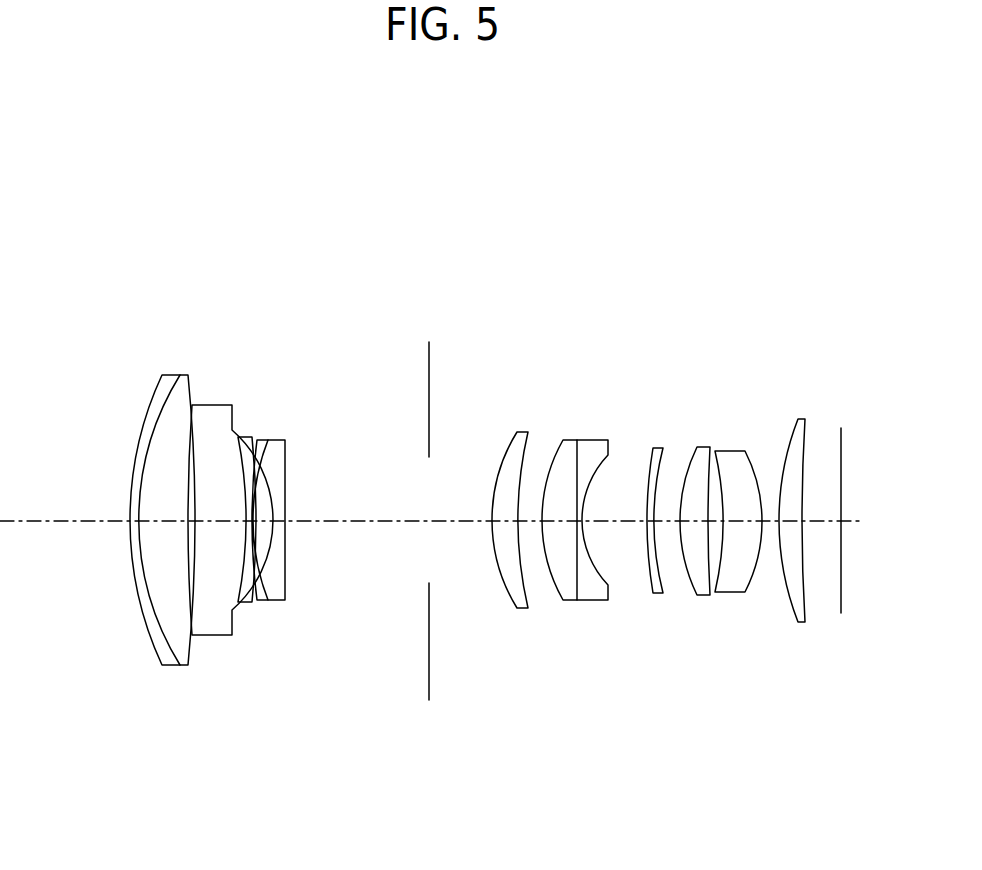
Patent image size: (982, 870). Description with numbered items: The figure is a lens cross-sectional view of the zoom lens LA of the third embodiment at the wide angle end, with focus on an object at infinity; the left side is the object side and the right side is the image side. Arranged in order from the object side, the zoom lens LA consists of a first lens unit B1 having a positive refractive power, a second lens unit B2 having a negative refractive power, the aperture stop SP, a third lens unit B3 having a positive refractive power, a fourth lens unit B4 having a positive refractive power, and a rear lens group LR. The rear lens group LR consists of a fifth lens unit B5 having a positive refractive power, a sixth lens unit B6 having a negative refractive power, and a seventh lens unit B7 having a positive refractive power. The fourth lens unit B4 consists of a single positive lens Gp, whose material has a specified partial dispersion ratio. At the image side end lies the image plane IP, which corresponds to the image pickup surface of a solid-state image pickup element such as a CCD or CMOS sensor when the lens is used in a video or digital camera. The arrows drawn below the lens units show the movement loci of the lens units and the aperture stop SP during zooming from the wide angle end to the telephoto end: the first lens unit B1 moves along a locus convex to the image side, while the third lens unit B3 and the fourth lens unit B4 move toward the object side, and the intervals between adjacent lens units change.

The zoom lens LA is at (829, 270).
The first lens unit B1 is at (128, 790).
The second lens unit B2 is at (268, 790).
The third lens unit B3 is at (318, 790).
The fourth lens unit B4 is at (577, 549).
The fifth lens unit B5 is at (630, 786).
The sixth lens unit B6 is at (681, 786).
The seventh lens unit B7 is at (758, 786).
The rear lens group LR is at (825, 303).
The aperture stop SP is at (297, 788).
The positive lens Gp is at (657, 482).
The image plane IP is at (842, 472).